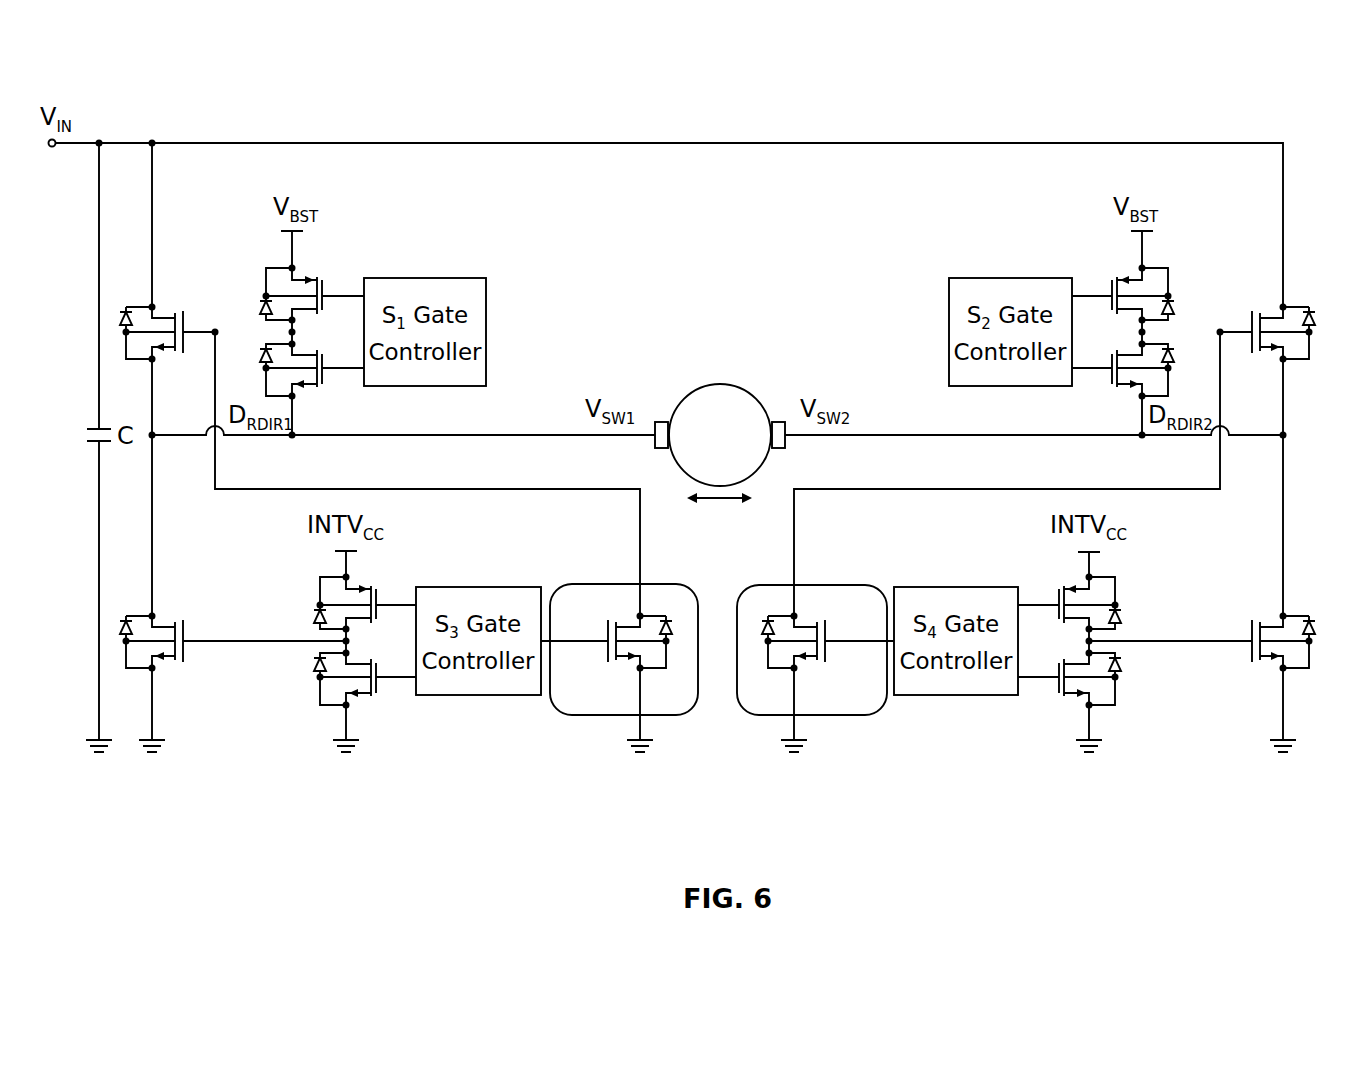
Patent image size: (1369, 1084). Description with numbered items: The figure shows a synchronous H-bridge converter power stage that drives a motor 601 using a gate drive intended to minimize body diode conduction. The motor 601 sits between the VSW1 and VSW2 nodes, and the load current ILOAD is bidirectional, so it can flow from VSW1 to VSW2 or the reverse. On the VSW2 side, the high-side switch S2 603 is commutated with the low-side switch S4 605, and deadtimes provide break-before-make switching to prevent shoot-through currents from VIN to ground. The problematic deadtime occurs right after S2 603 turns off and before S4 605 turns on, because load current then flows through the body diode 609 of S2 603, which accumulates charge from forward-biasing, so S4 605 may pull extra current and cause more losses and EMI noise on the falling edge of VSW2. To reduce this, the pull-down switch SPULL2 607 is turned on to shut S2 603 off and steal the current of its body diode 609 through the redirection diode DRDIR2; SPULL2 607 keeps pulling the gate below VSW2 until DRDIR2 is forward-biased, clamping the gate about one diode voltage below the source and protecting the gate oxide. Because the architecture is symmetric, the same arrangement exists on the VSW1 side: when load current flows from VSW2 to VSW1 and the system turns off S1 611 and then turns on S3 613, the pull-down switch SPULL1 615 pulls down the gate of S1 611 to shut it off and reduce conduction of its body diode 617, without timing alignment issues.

The motor 601 is at (687, 387).
The S2 603 is at (1272, 318).
The switch S4 605 is at (1272, 626).
The SPULL2 607 is at (822, 584).
The body diode 609 is at (1312, 309).
The S1 611 is at (165, 316).
The S3 613 is at (164, 622).
The SPULL1 615 is at (631, 623).
The body diode 617 is at (121, 314).